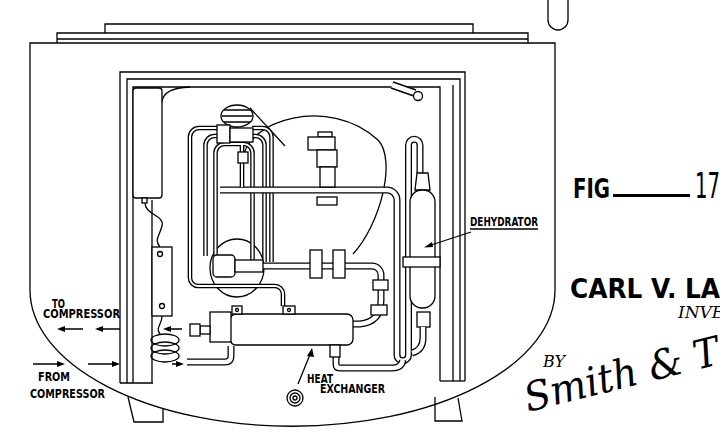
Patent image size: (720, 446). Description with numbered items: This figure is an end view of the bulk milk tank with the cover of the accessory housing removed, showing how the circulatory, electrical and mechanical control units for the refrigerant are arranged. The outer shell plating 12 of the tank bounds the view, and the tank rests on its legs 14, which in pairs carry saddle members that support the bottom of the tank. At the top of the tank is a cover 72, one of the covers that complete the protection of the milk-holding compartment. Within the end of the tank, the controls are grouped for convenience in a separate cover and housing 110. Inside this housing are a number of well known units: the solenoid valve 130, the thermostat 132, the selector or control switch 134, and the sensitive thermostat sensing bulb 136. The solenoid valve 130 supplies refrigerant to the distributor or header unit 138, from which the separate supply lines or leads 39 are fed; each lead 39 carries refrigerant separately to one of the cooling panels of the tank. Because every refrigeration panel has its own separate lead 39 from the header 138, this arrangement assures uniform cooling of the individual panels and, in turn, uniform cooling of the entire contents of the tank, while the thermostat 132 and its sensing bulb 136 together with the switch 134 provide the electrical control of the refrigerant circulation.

The outer shell plating 12 is at (557, 118).
The legs 14 is at (138, 411).
The cover 72 is at (493, 35).
The cover and housing 110 is at (462, 161).
The solenoid valve 130 is at (338, 147).
The thermostat 132 is at (157, 290).
The selector or control switch 134 is at (140, 133).
The thermostat sensing bulb 136 is at (303, 405).
The distributor or header unit 138 is at (238, 132).
The lead 39 is at (213, 175).